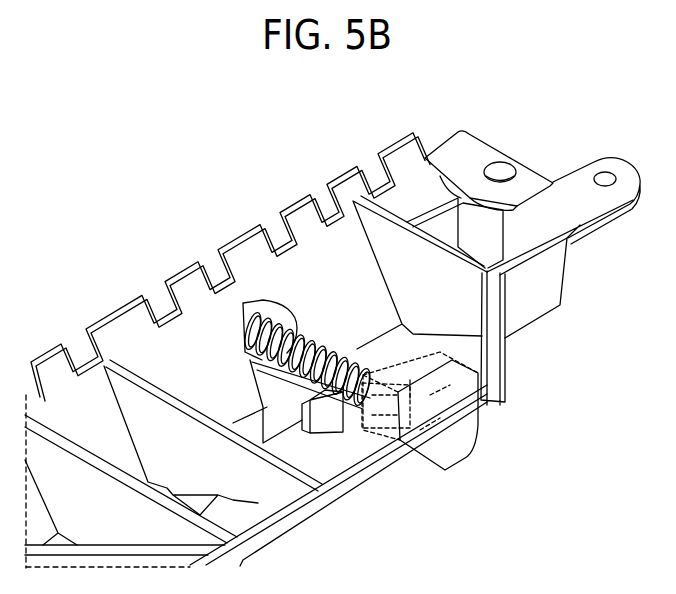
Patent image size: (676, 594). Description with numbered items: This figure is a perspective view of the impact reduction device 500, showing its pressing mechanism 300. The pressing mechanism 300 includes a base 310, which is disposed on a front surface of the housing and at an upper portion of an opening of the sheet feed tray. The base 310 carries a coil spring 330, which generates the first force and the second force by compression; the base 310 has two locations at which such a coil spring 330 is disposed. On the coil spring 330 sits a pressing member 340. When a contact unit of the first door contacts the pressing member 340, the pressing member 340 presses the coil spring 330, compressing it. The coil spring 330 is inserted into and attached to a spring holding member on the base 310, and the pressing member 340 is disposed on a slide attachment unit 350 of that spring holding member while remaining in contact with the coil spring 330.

The impact reduction device 500 is at (116, 145).
The pressing mechanism 300 is at (527, 146).
The base 310 is at (329, 470).
The coil spring 330 is at (316, 348).
The pressing member 340 is at (452, 462).
The slide attachment unit 350 is at (352, 424).